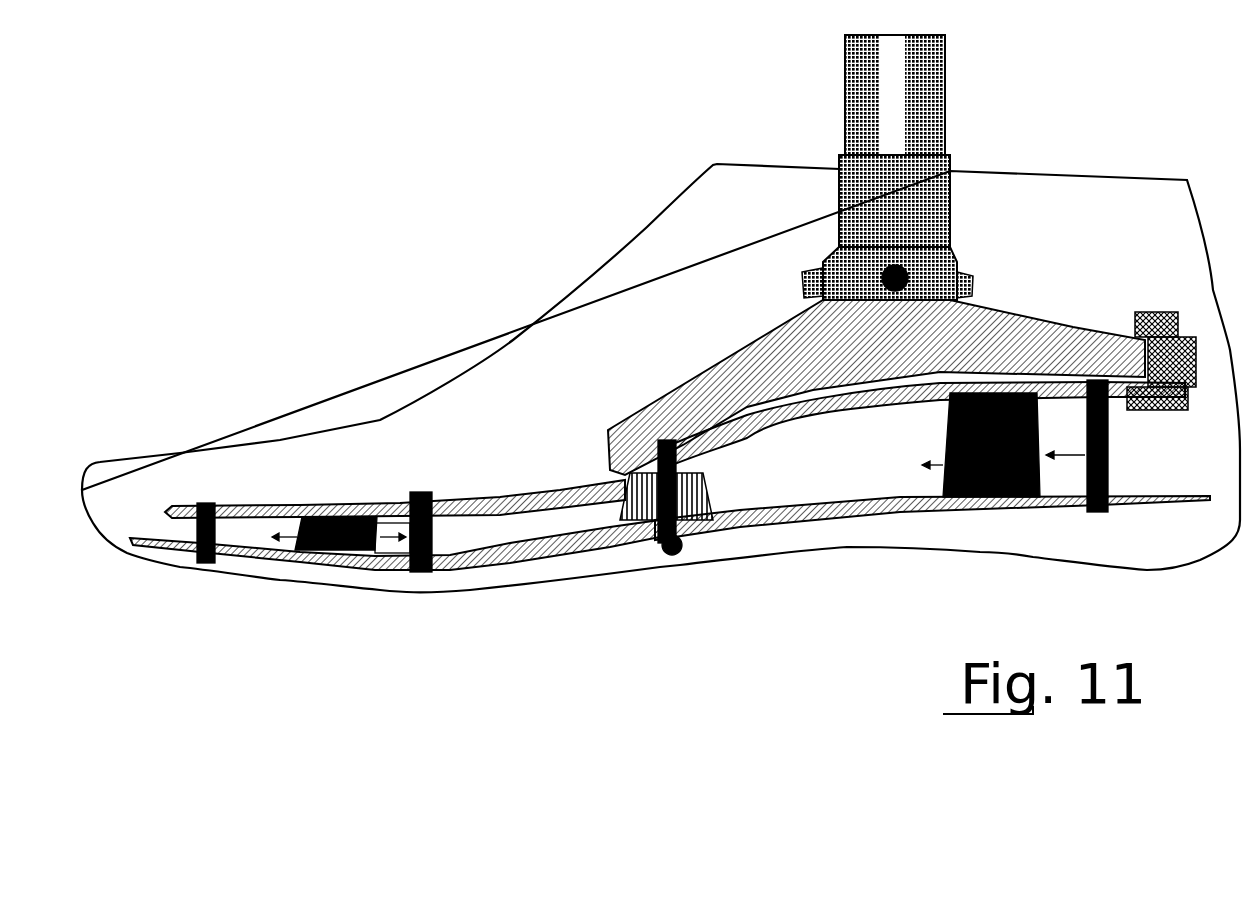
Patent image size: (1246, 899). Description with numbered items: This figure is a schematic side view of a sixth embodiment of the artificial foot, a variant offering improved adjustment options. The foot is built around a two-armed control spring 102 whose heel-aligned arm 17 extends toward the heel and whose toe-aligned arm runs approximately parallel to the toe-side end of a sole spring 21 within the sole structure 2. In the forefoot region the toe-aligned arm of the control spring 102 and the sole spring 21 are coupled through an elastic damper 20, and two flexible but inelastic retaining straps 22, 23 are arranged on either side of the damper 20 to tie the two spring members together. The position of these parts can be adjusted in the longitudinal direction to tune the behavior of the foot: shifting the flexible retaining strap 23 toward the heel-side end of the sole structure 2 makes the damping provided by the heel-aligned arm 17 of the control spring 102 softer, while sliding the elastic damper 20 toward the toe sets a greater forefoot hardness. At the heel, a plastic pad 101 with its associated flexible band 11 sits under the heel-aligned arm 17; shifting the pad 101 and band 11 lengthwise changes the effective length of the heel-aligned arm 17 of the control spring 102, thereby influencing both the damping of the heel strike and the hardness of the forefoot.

The sole structure 2 is at (742, 532).
The flexible band 11 is at (1097, 512).
The heel-aligned arm 17 is at (810, 420).
The elastic damper 20 is at (333, 517).
The sole spring 21 is at (483, 567).
The flexible retaining strap 22 is at (200, 503).
The flexible retaining strap 23 is at (430, 492).
The plastic pad 101 is at (943, 477).
The control spring 102 is at (557, 478).